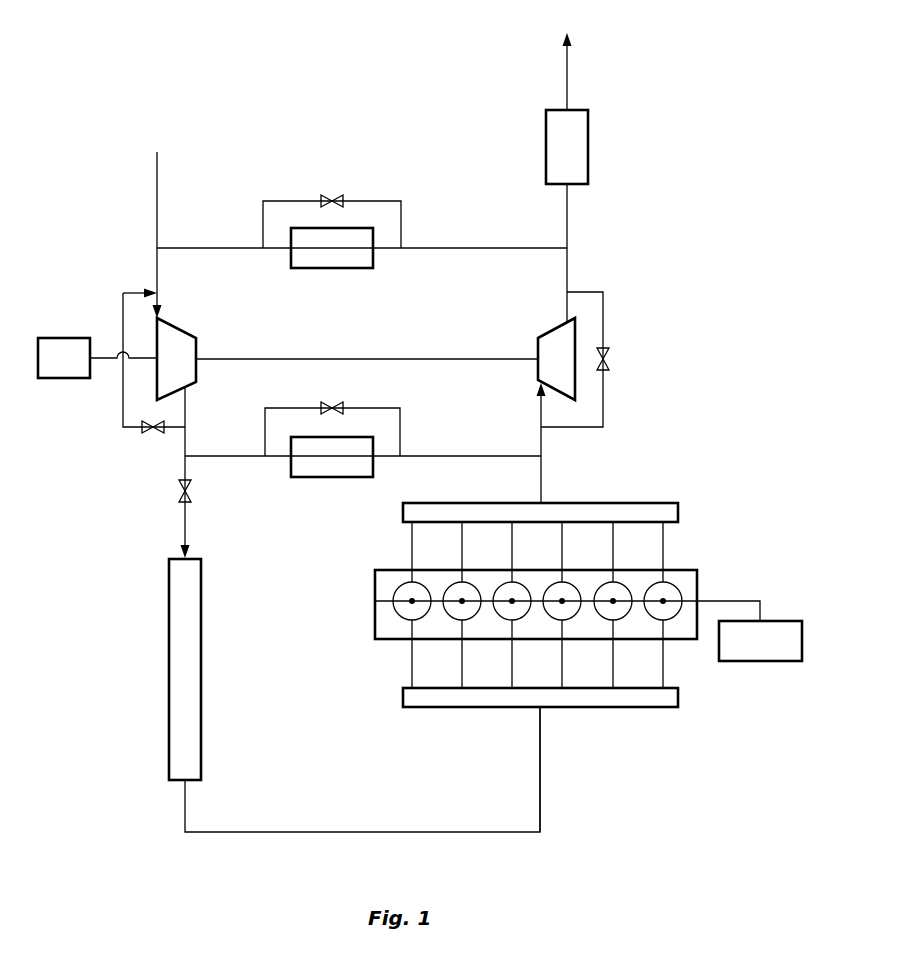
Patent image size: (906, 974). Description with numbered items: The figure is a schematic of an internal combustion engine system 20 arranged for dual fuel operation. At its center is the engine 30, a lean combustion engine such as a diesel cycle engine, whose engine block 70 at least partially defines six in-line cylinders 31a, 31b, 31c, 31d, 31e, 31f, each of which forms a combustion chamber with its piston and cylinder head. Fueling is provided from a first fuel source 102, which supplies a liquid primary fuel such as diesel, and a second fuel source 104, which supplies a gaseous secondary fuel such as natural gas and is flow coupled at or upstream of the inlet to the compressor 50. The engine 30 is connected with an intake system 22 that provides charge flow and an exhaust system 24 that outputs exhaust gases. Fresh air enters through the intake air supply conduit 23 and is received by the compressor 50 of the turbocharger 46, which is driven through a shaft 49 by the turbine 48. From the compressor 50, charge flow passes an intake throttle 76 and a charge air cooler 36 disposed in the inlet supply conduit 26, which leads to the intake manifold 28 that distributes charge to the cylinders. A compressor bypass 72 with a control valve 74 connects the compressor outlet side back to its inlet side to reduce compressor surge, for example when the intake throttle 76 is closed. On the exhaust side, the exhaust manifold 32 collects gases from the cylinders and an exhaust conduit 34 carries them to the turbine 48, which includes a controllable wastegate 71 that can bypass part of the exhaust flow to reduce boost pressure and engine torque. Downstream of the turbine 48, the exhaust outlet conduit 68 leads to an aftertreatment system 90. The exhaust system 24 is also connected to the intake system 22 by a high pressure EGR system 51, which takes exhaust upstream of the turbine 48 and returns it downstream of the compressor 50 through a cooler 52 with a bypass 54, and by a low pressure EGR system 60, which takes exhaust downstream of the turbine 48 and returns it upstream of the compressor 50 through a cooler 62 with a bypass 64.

The internal combustion engine system 20 is at (762, 452).
The intake system 22 is at (315, 621).
The intake air supply conduit 23 is at (157, 193).
The exhaust system 24 is at (622, 178).
The inlet supply conduit 26 is at (540, 777).
The intake manifold 28 is at (628, 707).
The engine 30 is at (517, 605).
The cylinder 31a is at (657, 612).
The cylinder 31b is at (603, 610).
The cylinder 31c is at (555, 613).
The cylinder 31d is at (508, 612).
The cylinder 31e is at (457, 613).
The cylinder 31f is at (418, 598).
The exhaust manifold 32 is at (625, 503).
The exhaust conduit 34 is at (541, 491).
The charge air cooler 36 is at (169, 667).
The turbocharger 46 is at (366, 347).
The turbine 48 is at (568, 370).
The shaft 49 is at (260, 358).
The compressor 50 is at (186, 370).
The high pressure EGR system 51 is at (346, 455).
The cooler 52 is at (360, 463).
The bypass 54 is at (385, 408).
The low pressure EGR system 60 is at (345, 198).
The cooler 62 is at (373, 255).
The bypass 64 is at (401, 200).
The exhaust outlet conduit 68 is at (567, 232).
The engine block 70 is at (682, 570).
The wastegate 71 is at (603, 313).
The compressor bypass 72 is at (135, 378).
The control valve 74 is at (152, 437).
The intake throttle 76 is at (180, 498).
The aftertreatment system 90 is at (588, 148).
The first fuel source 102 is at (772, 621).
The second fuel source 104 is at (68, 338).